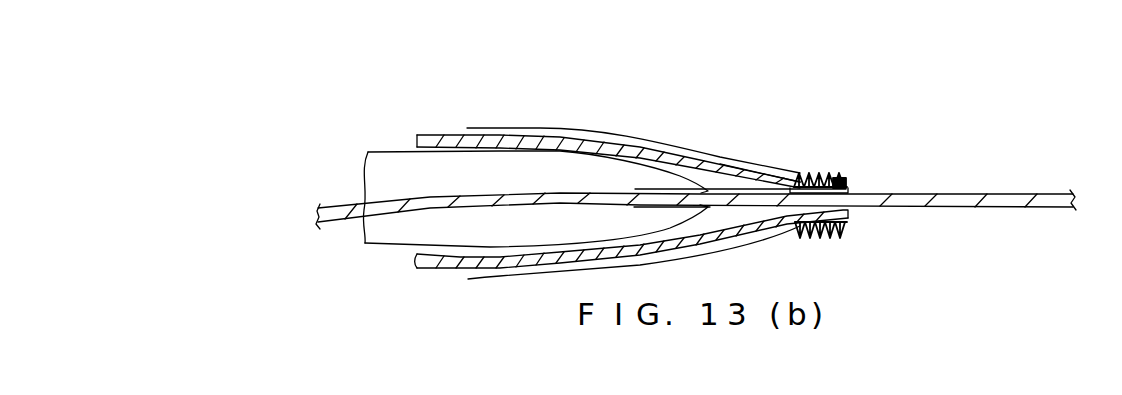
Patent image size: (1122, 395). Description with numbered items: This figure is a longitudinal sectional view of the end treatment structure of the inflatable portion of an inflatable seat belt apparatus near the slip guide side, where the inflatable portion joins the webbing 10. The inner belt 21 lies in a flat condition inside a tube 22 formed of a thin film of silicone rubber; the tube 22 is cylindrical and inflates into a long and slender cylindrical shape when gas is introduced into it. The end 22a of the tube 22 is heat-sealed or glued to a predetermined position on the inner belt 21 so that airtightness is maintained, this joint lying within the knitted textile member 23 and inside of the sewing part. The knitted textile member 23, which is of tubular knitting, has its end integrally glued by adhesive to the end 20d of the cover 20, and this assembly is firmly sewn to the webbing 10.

The webbing 10 is at (988, 194).
The cover 20 is at (796, 178).
The end of the cover 20d is at (843, 178).
The inner belt 21 is at (567, 152).
The tube 22 is at (477, 148).
The end of the tube 22a is at (728, 183).
The knitted textile member 23 is at (441, 132).